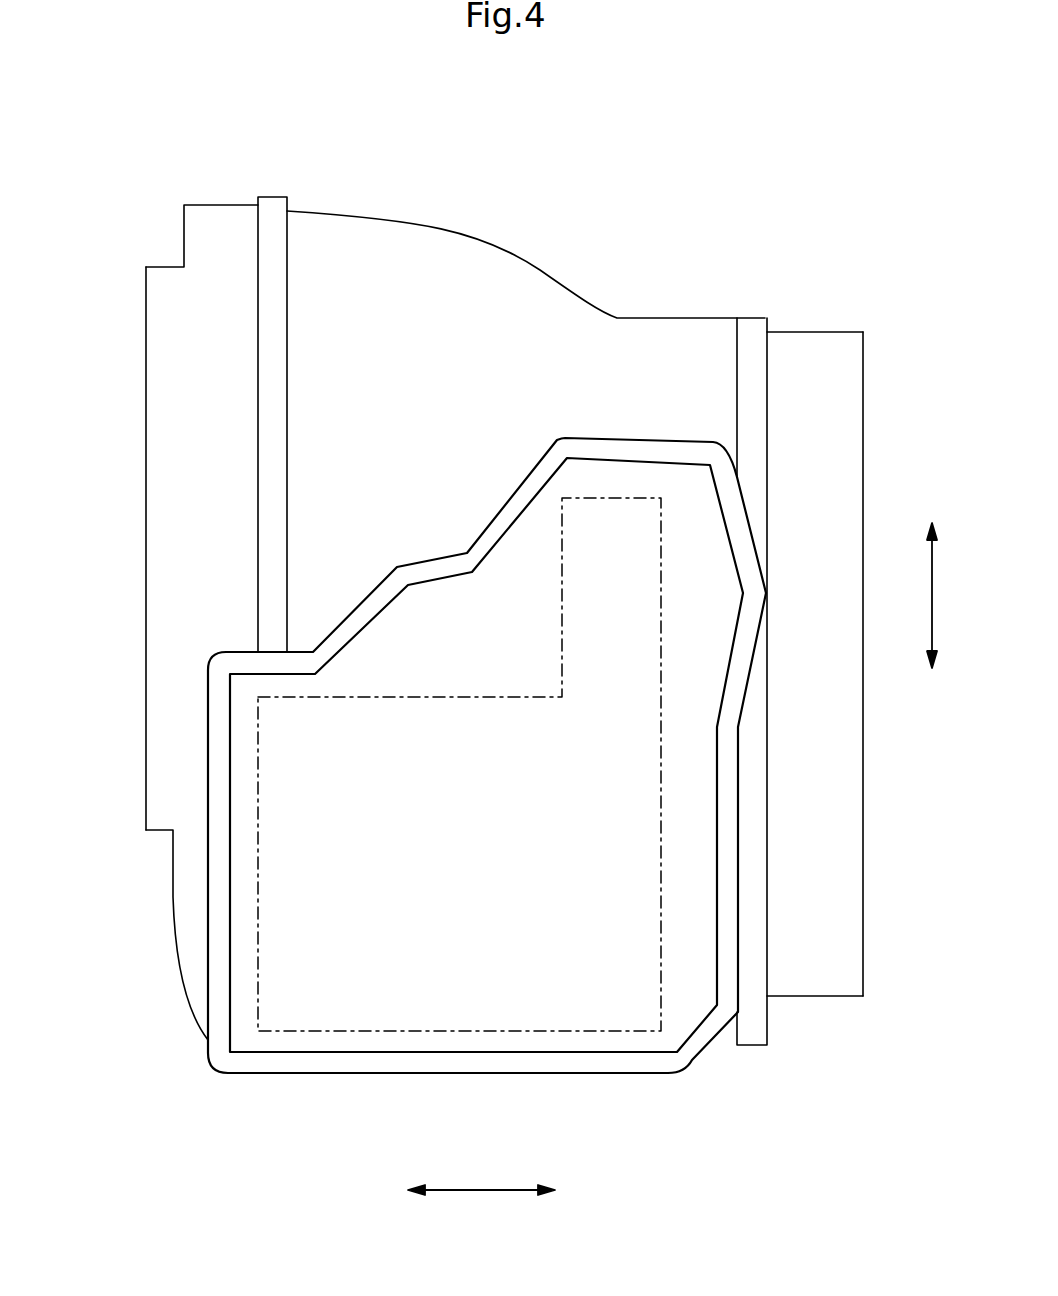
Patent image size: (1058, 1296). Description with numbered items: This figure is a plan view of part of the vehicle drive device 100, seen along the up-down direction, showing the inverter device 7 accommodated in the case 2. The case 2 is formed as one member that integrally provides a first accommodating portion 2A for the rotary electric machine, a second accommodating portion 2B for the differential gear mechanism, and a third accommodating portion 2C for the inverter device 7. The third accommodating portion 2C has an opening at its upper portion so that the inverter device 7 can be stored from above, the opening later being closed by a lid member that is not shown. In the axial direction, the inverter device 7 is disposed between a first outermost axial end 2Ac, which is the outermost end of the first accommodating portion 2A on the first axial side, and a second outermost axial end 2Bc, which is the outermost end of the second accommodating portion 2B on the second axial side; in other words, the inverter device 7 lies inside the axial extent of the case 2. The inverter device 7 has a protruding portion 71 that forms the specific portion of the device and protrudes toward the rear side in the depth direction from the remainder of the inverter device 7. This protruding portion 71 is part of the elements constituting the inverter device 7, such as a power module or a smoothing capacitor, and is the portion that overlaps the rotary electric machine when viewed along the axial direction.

The vehicle drive device 100 is at (175, 123).
The case 2 is at (427, 218).
The first accommodating portion 2A is at (112, 260).
The first outermost axial end 2Ac is at (145, 420).
The second accommodating portion 2B is at (812, 1027).
The second outermost axial end 2Bc is at (865, 887).
The third accommodating portion 2C is at (277, 1065).
The inverter device 7 is at (670, 1007).
The protruding portion 71 is at (587, 498).